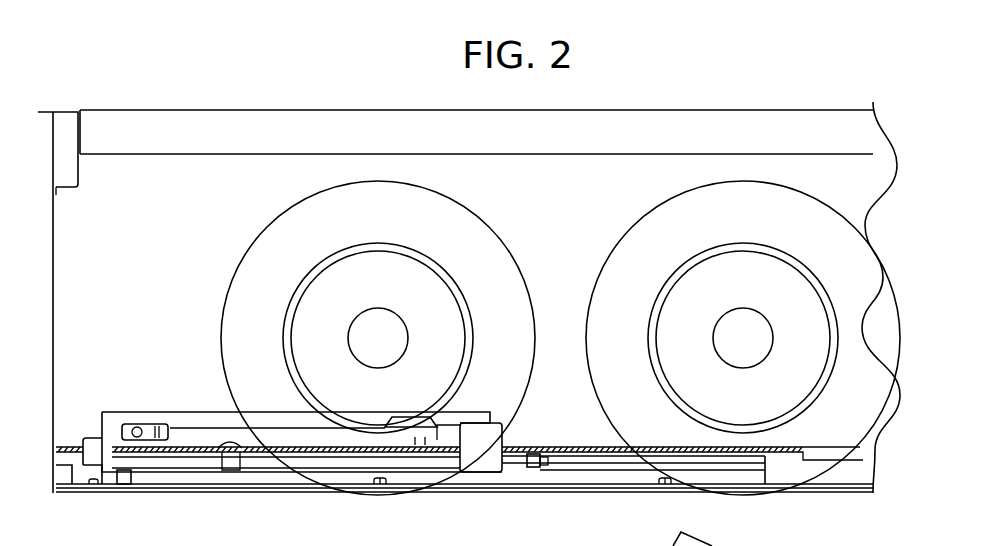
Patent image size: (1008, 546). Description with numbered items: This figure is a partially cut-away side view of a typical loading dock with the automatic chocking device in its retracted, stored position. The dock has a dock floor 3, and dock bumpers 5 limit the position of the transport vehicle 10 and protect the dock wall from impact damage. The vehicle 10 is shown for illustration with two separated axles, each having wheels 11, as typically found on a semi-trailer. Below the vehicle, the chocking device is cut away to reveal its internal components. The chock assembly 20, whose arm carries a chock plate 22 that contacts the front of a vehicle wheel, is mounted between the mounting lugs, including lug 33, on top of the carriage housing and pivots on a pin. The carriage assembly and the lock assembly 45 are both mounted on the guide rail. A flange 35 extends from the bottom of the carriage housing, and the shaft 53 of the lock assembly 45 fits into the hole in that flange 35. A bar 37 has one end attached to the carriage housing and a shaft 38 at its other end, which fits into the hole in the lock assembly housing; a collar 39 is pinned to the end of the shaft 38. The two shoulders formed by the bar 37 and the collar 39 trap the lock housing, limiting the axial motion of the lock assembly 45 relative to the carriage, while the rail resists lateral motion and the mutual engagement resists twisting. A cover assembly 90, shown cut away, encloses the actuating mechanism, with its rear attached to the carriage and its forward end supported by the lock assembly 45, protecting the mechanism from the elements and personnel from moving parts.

The dock floor 3 is at (42, 110).
The dock bumpers 5 is at (67, 110).
The transport vehicle 10 is at (163, 110).
The wheels 11 is at (538, 322).
The chock assembly 20 is at (175, 428).
The chock plate 22 is at (745, 545).
The mounting lug 33 is at (132, 422).
The flange 35 is at (112, 488).
The bar 37 is at (408, 472).
The shaft 38 is at (508, 468).
The collar 39 is at (530, 470).
The lock assembly 45 is at (507, 437).
The shaft 53 is at (123, 488).
The cover assembly 90 is at (217, 412).